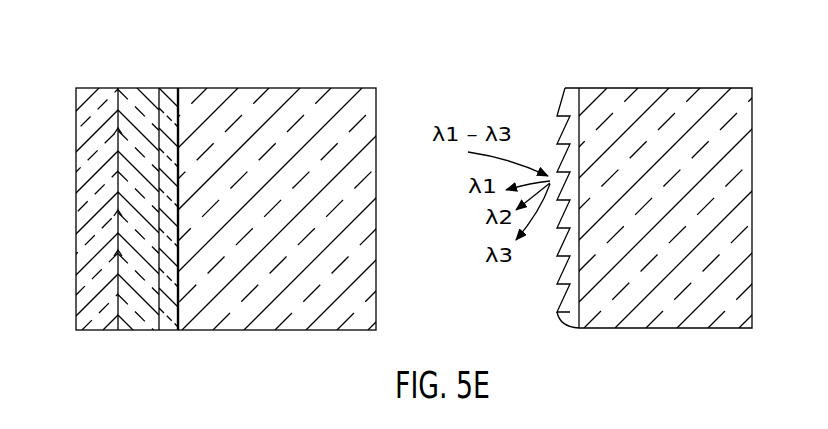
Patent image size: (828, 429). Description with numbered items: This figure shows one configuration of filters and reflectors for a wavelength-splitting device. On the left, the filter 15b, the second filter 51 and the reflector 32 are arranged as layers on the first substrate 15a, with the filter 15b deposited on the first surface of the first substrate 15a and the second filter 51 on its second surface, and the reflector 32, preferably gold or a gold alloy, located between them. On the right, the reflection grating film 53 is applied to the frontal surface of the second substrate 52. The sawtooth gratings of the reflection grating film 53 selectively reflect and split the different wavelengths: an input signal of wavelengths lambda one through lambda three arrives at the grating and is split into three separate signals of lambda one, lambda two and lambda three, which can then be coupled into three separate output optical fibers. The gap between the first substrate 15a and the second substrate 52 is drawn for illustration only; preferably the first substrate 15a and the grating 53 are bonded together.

The second filter 51 is at (98, 88).
The filter 15b is at (132, 88).
The reflector 32 is at (168, 88).
The first substrate 15a is at (308, 88).
The reflection grating film 53 is at (568, 88).
The second substrate 52 is at (685, 88).